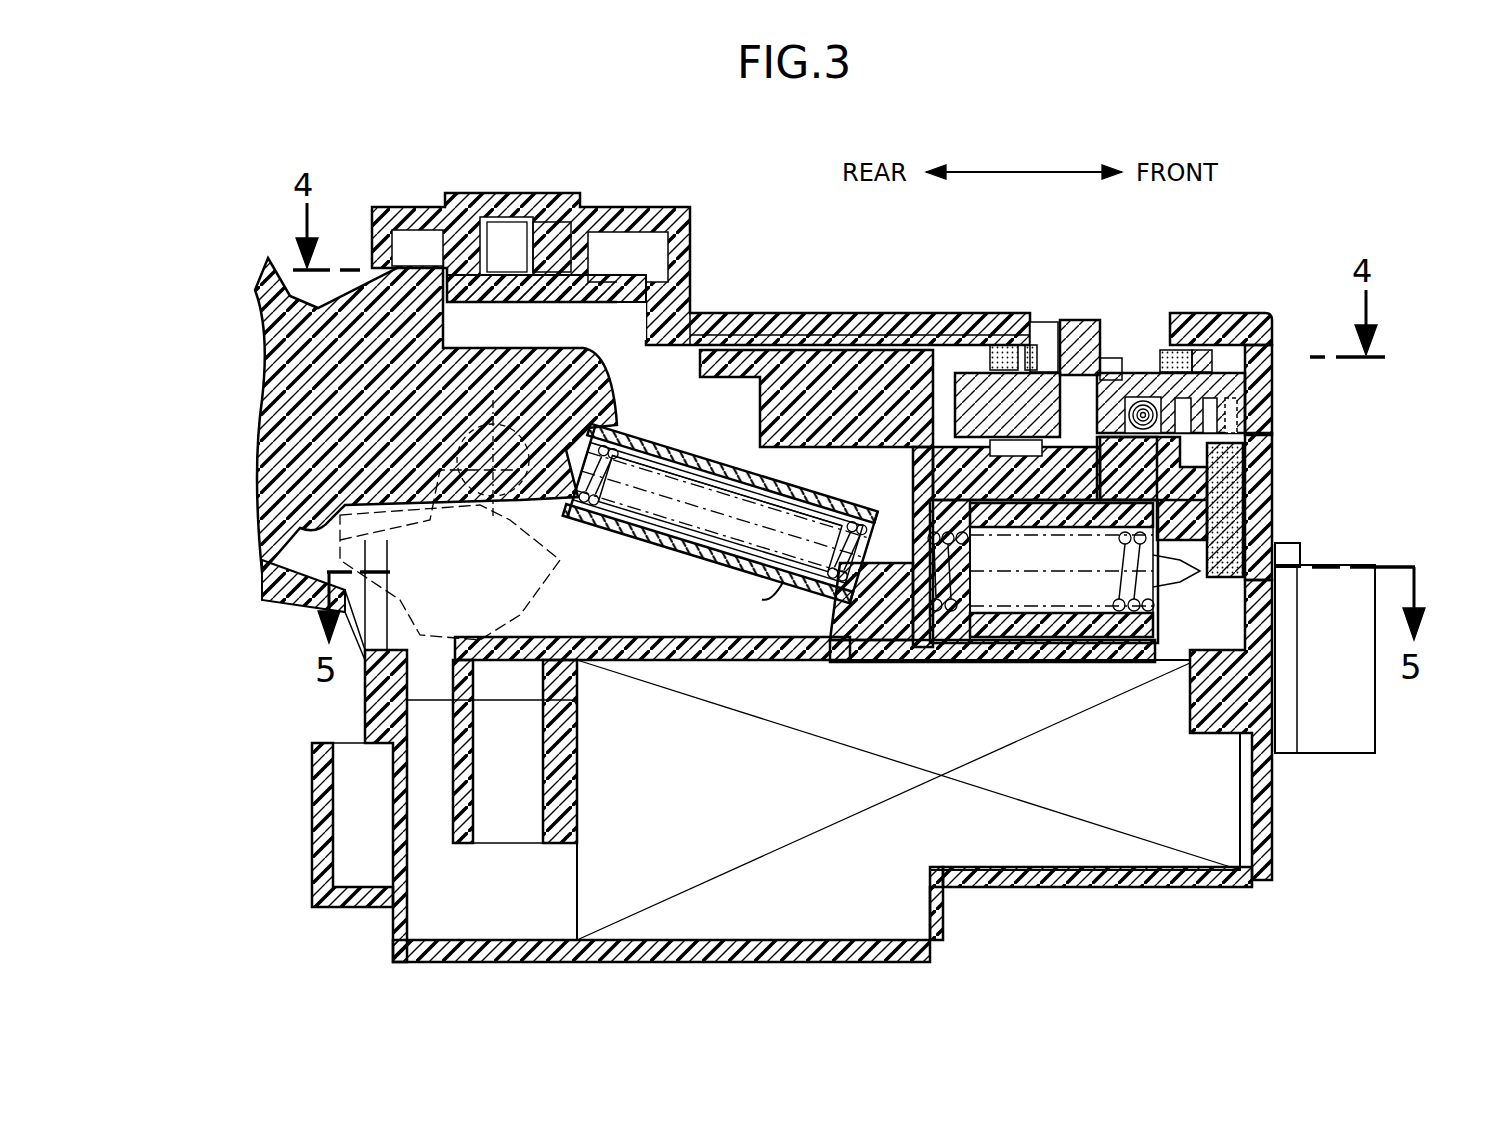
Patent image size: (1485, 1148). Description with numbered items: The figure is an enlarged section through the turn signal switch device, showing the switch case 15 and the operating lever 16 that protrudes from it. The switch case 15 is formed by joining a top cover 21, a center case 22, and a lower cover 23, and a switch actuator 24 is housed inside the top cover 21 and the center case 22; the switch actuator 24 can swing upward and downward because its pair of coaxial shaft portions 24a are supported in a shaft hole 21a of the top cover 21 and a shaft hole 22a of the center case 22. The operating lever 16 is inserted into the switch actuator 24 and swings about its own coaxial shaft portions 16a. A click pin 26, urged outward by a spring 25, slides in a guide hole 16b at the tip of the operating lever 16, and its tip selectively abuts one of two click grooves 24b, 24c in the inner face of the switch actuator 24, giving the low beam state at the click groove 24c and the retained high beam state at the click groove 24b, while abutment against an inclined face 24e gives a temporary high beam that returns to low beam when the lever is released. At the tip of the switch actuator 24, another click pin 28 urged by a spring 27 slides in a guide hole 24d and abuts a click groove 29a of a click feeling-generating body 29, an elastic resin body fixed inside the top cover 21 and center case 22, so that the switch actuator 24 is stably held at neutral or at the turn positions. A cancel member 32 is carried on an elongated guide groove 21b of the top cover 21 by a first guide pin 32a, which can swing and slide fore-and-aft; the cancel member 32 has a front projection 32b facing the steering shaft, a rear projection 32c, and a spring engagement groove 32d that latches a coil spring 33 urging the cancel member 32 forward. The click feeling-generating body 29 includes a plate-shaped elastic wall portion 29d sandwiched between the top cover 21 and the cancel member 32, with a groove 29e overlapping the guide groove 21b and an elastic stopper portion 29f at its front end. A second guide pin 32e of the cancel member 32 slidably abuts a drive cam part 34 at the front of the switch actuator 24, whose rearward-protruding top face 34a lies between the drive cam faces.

The switch case 15 is at (752, 228).
The operating lever 16 is at (260, 345).
The shaft portions 16a is at (533, 530).
The guide hole 16b is at (690, 557).
The top cover 21 is at (862, 310).
The shaft hole 21a is at (508, 230).
The guide groove 21b is at (1045, 335).
The center case 22 is at (1285, 462).
The shaft hole 22a is at (505, 705).
The lower cover 23 is at (1060, 900).
The switch actuator 24 is at (778, 343).
The shaft portions 24a is at (545, 230).
The click groove 24b is at (920, 535).
The click groove 24c is at (862, 650).
The guide hole 24d is at (1040, 640).
The inclined face 24e is at (835, 632).
The spring 25 is at (597, 500).
The click pin 26 is at (680, 448).
The spring 27 is at (945, 650).
The click pin 28 is at (992, 650).
The click feeling-generating body 29 is at (1262, 514).
The click groove 29a is at (1148, 632).
The elastic wall portion 29d is at (1230, 330).
The groove 29e is at (1160, 350).
The elastic stopper portion 29f is at (1168, 352).
The cancel member 32 is at (1285, 407).
The first guide pin 32a is at (1085, 330).
The front projection 32b is at (1272, 363).
The rear projection 32c is at (958, 340).
The spring engagement groove 32d is at (1130, 462).
The second guide pin 32e is at (1055, 478).
The coil spring 33 is at (1120, 358).
The drive cam part 34 is at (1200, 470).
The top face 34a is at (1088, 445).